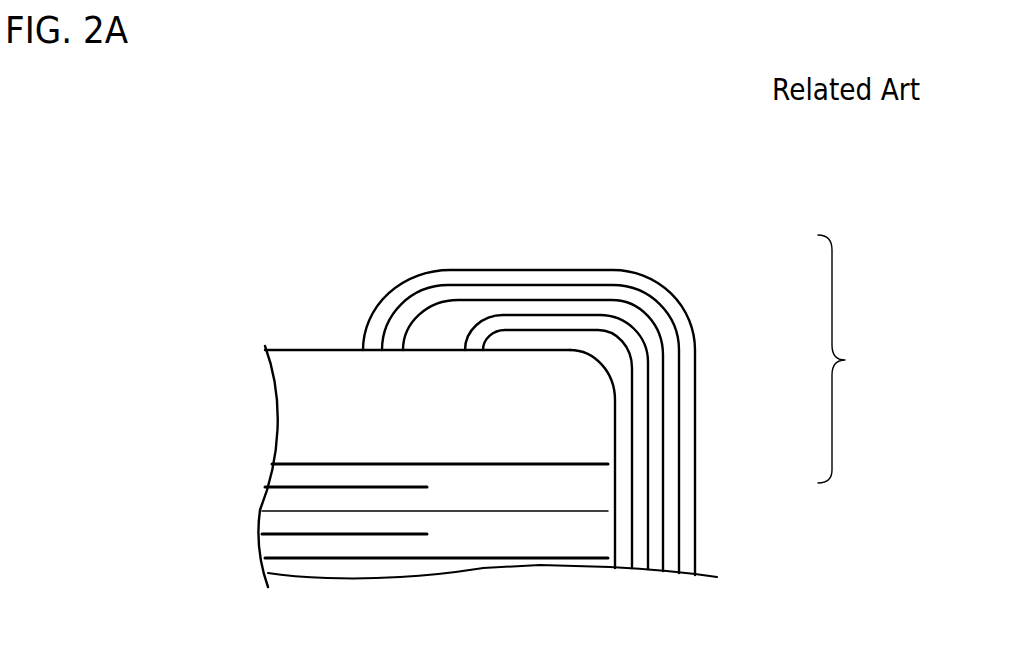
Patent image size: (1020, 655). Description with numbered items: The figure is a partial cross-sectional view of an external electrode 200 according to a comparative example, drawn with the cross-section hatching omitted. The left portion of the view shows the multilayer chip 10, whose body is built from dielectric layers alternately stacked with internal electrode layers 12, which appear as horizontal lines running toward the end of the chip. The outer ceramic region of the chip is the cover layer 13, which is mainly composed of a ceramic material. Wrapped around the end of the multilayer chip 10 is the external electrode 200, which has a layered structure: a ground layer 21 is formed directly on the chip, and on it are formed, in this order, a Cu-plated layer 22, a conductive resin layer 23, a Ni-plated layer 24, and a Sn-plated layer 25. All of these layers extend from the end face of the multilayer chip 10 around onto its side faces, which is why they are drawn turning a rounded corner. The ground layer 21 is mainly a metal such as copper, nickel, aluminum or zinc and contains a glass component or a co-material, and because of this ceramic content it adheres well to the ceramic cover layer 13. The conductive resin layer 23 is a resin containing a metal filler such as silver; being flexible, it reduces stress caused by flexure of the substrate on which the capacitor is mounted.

The multilayer chip 10 is at (283, 338).
The internal electrode layer 12 is at (482, 558).
The cover layer 13 is at (338, 385).
The ground layer 21 is at (622, 483).
The Cu-plated layer 22 is at (640, 426).
The conductive resin layer 23 is at (655, 377).
The Ni-plated layer 24 is at (663, 337).
The Sn-plated layer 25 is at (662, 302).
The external electrode 200 is at (857, 359).